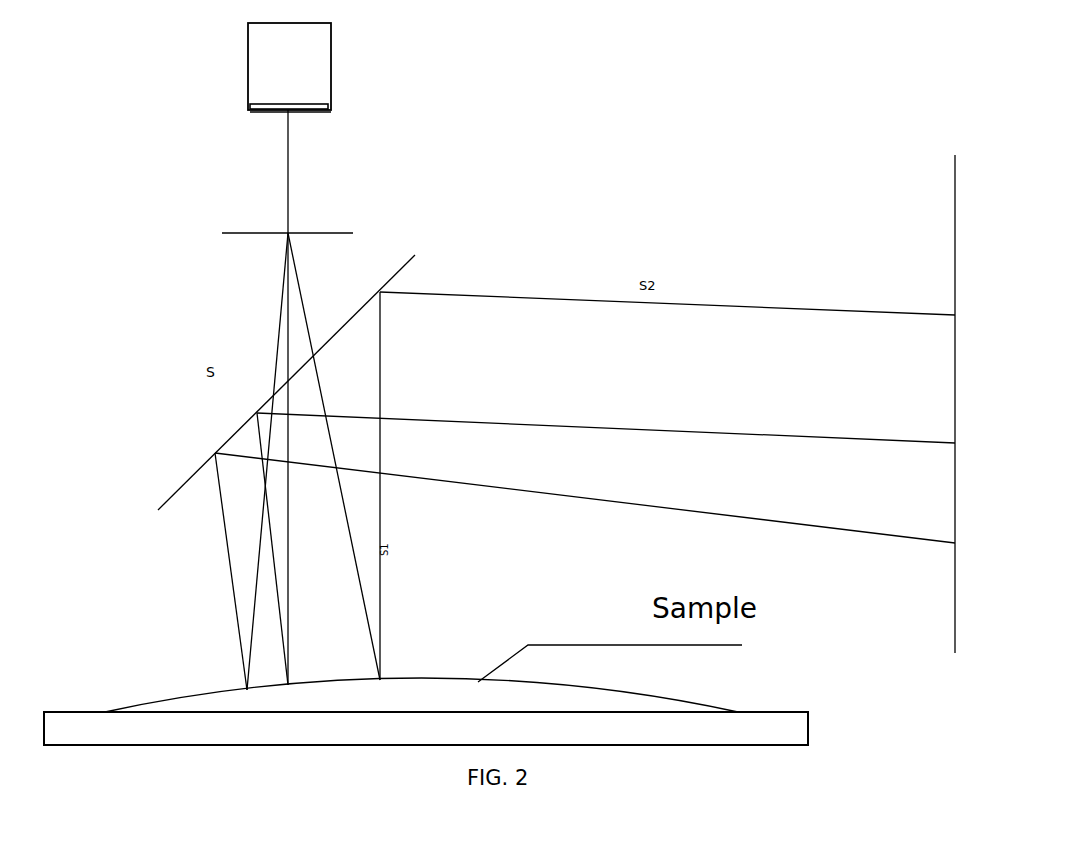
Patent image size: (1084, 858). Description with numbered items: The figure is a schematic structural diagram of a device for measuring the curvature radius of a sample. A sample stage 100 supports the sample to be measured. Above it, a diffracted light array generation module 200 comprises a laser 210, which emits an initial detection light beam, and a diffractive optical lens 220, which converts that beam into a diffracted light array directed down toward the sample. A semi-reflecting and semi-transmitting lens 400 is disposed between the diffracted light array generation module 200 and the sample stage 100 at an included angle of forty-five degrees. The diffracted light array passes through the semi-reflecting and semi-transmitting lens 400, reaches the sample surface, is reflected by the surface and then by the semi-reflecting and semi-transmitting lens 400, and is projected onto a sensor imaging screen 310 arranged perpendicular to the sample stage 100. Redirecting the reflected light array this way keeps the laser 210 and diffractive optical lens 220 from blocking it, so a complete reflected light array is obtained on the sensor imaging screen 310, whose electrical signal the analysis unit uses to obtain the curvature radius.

The sample stage 100 is at (490, 710).
The diffracted light array generation module 200 is at (353, 129).
The laser 210 is at (326, 67).
The diffractive optical lens 220 is at (317, 206).
The sensor imaging screen 310 is at (861, 397).
The semi-reflecting and semi-transmitting lens 400 is at (231, 382).